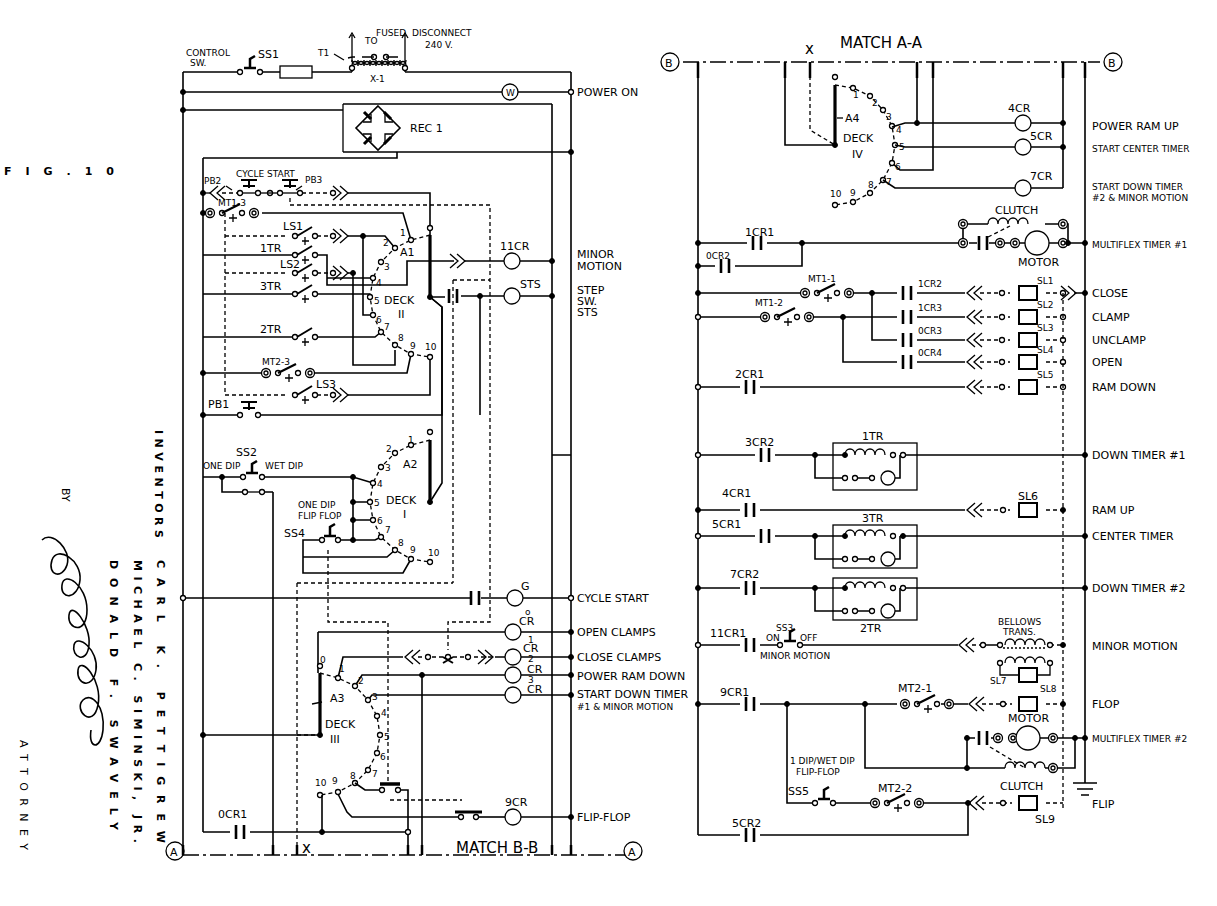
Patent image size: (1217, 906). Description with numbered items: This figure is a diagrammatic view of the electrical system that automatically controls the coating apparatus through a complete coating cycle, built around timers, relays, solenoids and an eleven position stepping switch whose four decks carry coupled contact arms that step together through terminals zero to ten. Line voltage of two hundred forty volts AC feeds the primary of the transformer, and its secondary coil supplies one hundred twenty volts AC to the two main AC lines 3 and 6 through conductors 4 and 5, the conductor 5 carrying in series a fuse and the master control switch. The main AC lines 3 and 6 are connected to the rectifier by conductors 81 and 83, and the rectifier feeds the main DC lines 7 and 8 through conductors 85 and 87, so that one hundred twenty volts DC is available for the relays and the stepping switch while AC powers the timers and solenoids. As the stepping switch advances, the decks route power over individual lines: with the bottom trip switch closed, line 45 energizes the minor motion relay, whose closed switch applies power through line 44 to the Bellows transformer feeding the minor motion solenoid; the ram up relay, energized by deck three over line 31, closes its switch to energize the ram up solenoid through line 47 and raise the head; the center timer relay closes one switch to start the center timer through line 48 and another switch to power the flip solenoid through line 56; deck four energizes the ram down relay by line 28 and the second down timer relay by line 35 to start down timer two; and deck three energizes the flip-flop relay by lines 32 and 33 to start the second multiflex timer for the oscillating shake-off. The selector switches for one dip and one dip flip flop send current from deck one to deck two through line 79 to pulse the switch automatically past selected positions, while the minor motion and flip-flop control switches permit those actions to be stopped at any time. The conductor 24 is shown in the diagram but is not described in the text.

The main AC line 3 is at (572, 188).
The conductor 4 is at (466, 72).
The conductor 5 is at (316, 74).
The main AC line 6 is at (182, 282).
The main DC line 7 is at (203, 554).
The main DC line 8 is at (572, 455).
The conductor line 24 is at (271, 677).
The line 28 is at (424, 750).
The line 31 is at (318, 824).
The line 32 is at (366, 817).
The line 33 is at (489, 810).
The line 35 is at (984, 174).
The line 44 is at (929, 649).
The line 45 is at (478, 252).
The line 47 is at (806, 512).
The line 48 is at (803, 538).
The line 56 is at (844, 820).
The line 79 is at (442, 428).
The conductor 81 is at (244, 110).
The conductor 83 is at (473, 141).
The conductor 85 is at (452, 106).
The conductor 87 is at (338, 158).